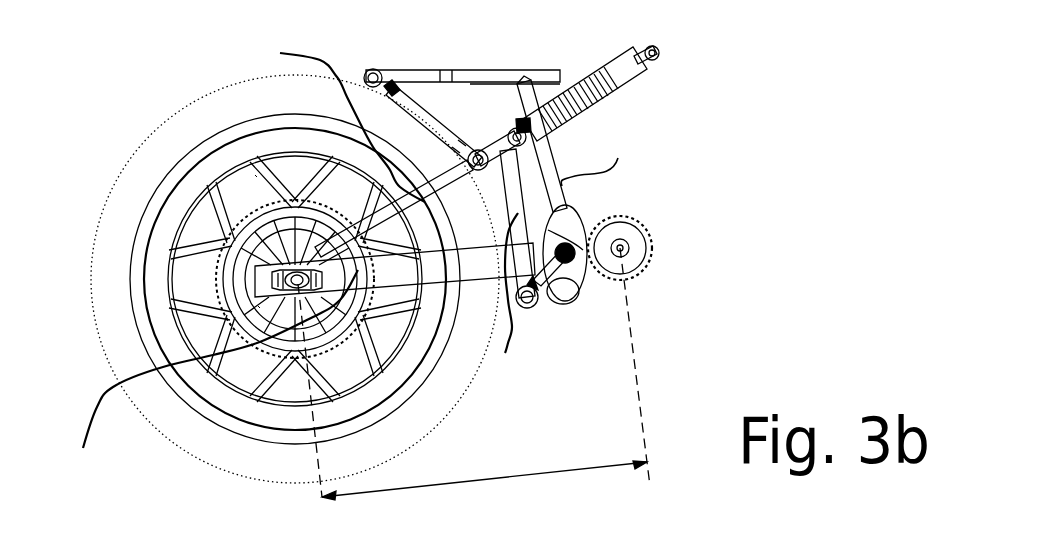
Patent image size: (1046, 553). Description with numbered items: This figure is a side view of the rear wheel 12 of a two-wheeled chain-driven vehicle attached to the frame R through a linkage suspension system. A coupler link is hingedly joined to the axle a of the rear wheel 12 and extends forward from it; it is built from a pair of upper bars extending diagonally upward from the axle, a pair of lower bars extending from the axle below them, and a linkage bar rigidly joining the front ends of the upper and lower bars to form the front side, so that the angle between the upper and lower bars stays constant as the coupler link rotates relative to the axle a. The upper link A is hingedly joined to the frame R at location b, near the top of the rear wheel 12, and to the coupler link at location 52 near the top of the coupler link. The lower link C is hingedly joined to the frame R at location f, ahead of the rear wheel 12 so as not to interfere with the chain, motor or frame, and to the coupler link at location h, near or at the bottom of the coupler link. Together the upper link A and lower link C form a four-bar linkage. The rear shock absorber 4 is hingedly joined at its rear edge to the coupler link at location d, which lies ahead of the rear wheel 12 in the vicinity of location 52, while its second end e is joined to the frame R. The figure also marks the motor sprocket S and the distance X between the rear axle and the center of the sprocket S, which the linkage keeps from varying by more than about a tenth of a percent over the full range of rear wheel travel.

The rear wheel 12 is at (163, 143).
The rear shock absorber 4 is at (622, 58).
The location 52 is at (499, 135).
The upper link A is at (430, 98).
The frame R is at (415, 70).
The sprocket S is at (640, 270).
The lower link C is at (580, 298).
The distance X is at (547, 472).
The axle a is at (255, 315).
The location b is at (364, 72).
The location d is at (552, 145).
The second end e is at (660, 48).
The location f is at (604, 214).
The wheel pivot point g is at (254, 185).
The location h is at (532, 308).